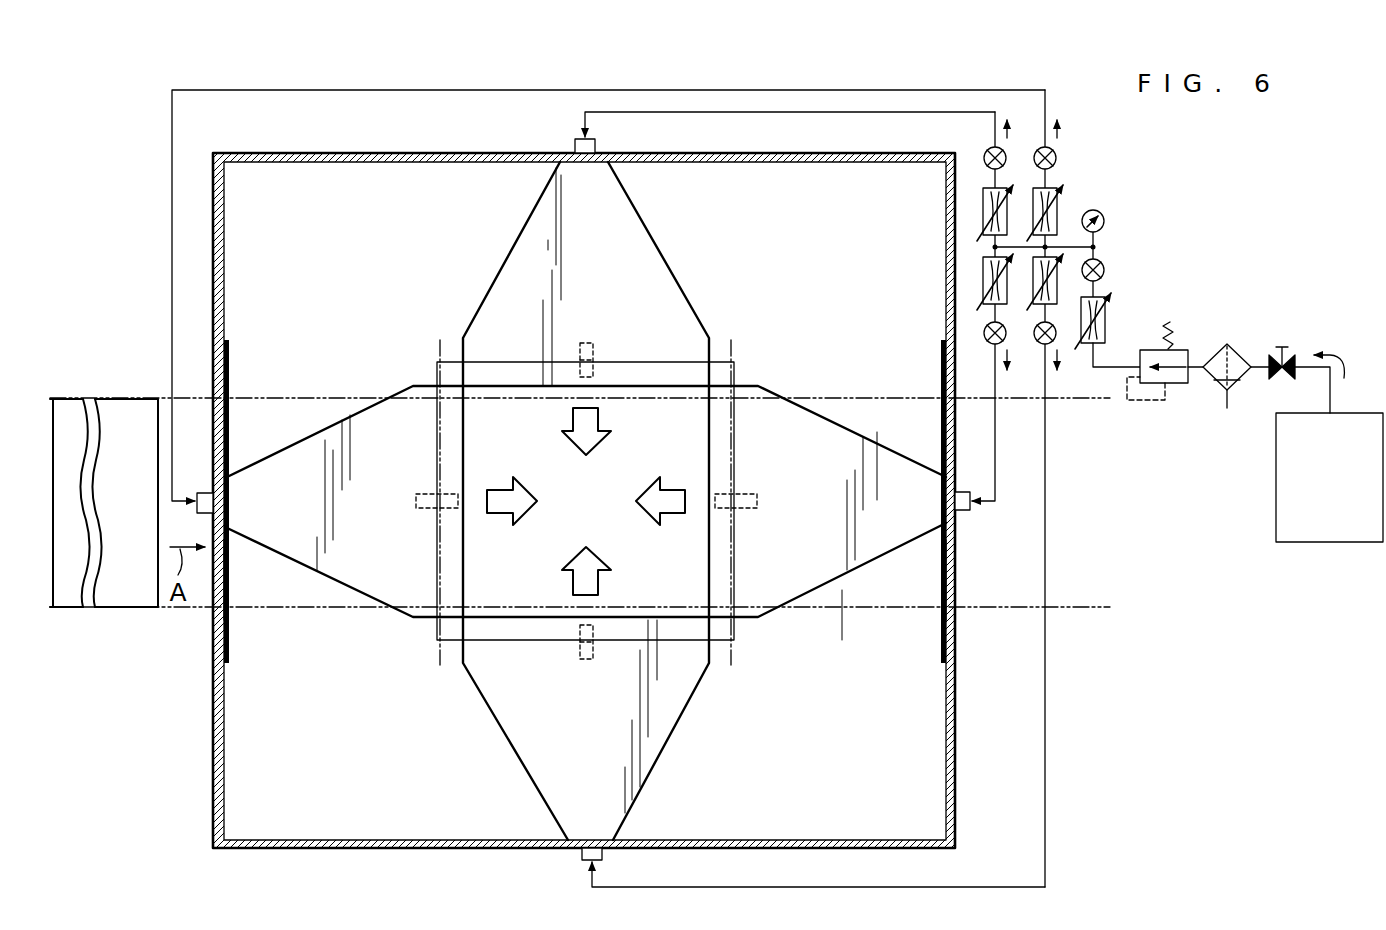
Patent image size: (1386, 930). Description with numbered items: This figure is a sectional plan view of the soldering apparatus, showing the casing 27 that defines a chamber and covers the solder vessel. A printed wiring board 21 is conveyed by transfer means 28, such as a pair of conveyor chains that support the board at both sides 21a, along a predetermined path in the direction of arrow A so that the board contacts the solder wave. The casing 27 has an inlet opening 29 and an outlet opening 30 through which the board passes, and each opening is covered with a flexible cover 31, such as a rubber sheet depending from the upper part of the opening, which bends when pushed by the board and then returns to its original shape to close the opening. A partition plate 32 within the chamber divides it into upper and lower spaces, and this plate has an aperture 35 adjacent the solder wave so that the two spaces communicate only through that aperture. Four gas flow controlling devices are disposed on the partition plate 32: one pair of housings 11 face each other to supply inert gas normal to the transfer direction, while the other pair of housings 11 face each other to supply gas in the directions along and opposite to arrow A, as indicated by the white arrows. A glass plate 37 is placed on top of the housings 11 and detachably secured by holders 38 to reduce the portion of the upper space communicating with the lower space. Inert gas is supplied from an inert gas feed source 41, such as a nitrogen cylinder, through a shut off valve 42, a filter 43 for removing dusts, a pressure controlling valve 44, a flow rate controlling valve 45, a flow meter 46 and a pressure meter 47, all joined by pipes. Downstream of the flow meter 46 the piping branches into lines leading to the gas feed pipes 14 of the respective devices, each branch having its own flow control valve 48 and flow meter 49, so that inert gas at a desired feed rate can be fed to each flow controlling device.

The housing 11 is at (505, 250).
The gas feed pipe 14 is at (575, 150).
The printed wiring board 21 is at (82, 405).
The sides of the printed wiring board 21a is at (133, 405).
The casing 27 is at (956, 805).
The transfer means 28 is at (258, 395).
The inlet opening 29 is at (232, 580).
The outlet opening 30 is at (946, 625).
The flexible cover 31 is at (212, 660).
The partition plate 32 is at (400, 180).
The aperture 35 is at (648, 415).
The glass plate 37 is at (530, 362).
The holder 38 is at (585, 343).
The inert gas feed source 41 is at (1276, 500).
The shut off valve 42 is at (1286, 352).
The filter 43 is at (1230, 348).
The pressure controlling valve 44 is at (1175, 388).
The flow rate controlling valve 45 is at (1108, 320).
The flow meter 46 is at (1105, 270).
The pressure meter 47 is at (1103, 217).
The flow control valve 48 is at (1060, 196).
The flow meter 49 is at (985, 158).